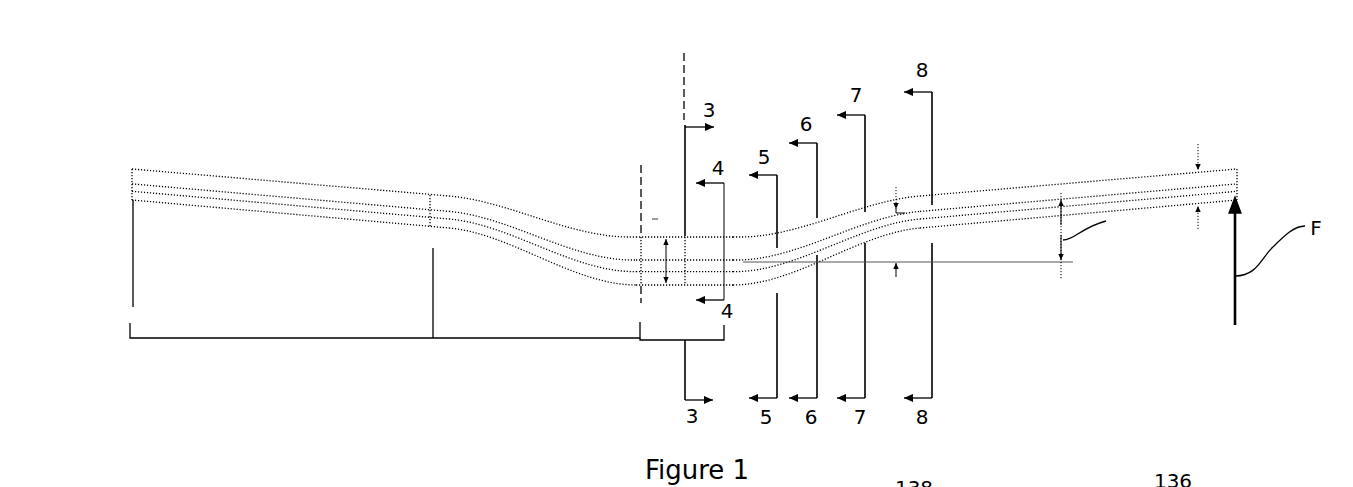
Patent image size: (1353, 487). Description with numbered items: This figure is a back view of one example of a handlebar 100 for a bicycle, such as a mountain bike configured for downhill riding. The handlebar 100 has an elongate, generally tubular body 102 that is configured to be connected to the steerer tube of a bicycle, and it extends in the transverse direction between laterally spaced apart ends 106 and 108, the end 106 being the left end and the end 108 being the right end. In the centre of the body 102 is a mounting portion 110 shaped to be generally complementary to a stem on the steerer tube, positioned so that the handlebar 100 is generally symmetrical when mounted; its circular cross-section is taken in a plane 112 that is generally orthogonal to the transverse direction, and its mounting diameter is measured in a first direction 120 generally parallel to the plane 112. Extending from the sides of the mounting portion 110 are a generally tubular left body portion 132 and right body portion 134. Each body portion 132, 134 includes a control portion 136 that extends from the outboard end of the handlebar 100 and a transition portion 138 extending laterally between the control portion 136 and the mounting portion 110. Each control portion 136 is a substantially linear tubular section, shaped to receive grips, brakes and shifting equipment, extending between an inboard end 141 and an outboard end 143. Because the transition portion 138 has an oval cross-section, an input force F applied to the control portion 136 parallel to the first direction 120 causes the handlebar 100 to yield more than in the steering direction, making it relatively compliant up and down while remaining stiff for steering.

The handlebar 100 is at (231, 127).
The body 102 is at (425, 163).
The end 106 is at (149, 159).
The end 108 is at (1195, 99).
The mounting portion 110 is at (683, 340).
The plane 112 is at (684, 67).
The first direction 120 is at (607, 74).
The left body portion 132 is at (316, 159).
The right body portion 134 is at (1015, 102).
The control portion 136 is at (281, 338).
The transition portion 138 is at (537, 338).
The inboard end 141 is at (421, 229).
The outboard end 143 is at (142, 207).